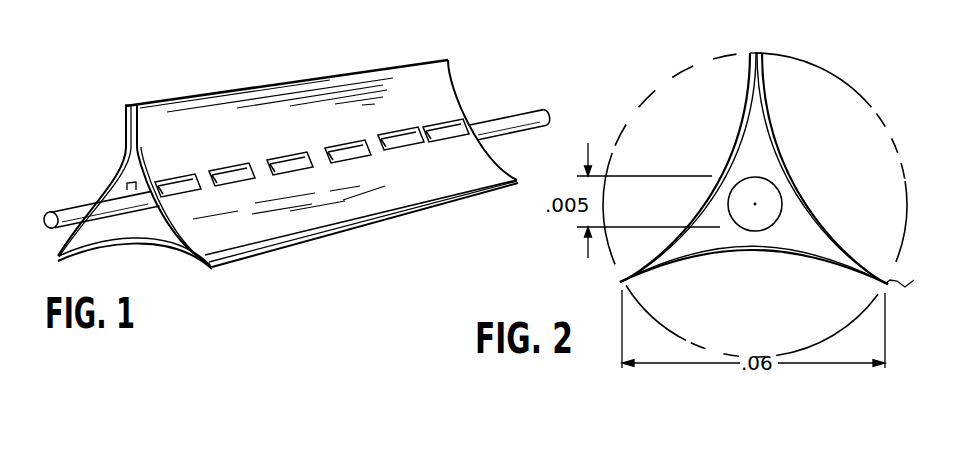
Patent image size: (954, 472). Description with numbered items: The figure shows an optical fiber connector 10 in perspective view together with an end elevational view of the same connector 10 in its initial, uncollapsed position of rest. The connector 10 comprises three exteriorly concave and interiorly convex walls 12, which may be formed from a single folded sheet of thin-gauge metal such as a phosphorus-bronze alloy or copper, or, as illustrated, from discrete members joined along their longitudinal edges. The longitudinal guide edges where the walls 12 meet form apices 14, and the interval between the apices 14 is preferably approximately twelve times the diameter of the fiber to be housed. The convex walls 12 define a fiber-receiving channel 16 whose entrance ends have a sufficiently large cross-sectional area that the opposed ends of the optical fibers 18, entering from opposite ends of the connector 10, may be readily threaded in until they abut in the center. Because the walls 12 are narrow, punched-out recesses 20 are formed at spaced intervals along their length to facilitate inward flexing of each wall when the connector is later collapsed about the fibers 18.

In FIG. 1, the connector 10 is at (416, 62).
In FIG. 2, the connector 10 is at (780, 161).
In FIG. 1, the walls 12 is at (443, 175).
In FIG. 2, the walls 12 is at (815, 215).
In FIG. 2, the apices 14 is at (905, 287).
In FIG. 2, the channel 16 is at (766, 143).
In FIG. 1, the optical fibers 18 is at (74, 207).
In FIG. 2, the optical fibers 18 is at (770, 218).
In FIG. 1, the recesses 20 is at (395, 150).